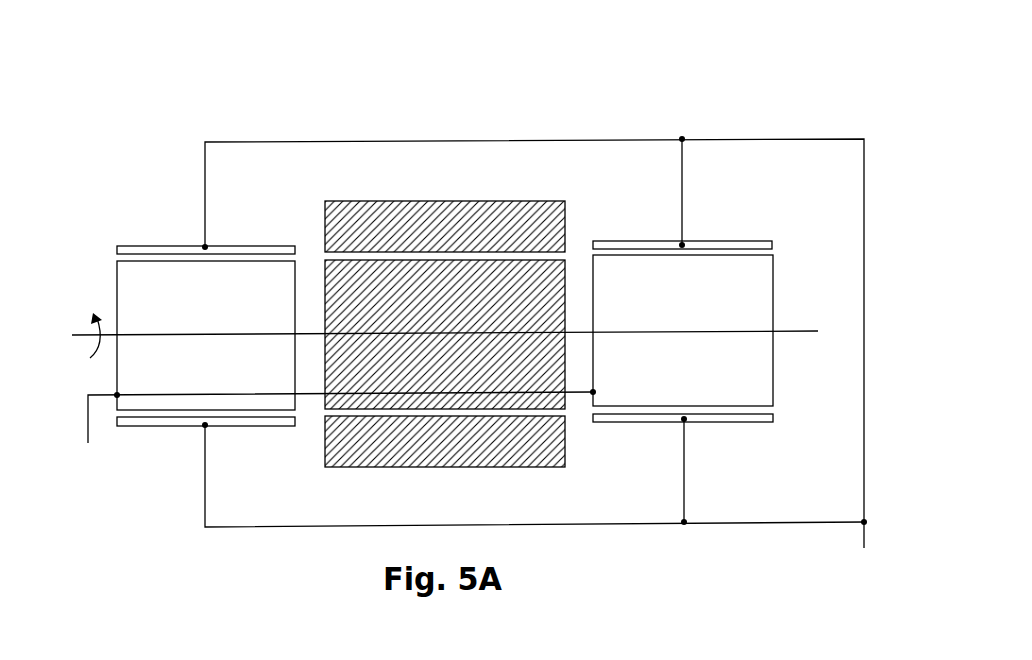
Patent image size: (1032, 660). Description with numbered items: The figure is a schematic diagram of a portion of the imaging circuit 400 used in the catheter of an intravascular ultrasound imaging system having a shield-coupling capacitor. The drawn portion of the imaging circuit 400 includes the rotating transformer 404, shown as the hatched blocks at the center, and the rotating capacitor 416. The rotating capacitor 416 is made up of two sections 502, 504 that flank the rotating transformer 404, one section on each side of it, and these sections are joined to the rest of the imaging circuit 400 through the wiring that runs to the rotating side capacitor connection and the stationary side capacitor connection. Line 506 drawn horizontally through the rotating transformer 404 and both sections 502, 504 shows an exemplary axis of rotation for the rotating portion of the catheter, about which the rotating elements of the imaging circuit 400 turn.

The imaging circuit 400 is at (811, 104).
The rotating transformer 404 is at (441, 200).
The rotating capacitor 416 is at (145, 236).
The section of the rotating capacitor 502 is at (176, 442).
The section of the rotating capacitor 504 is at (752, 436).
The axis of rotation 506 is at (80, 336).